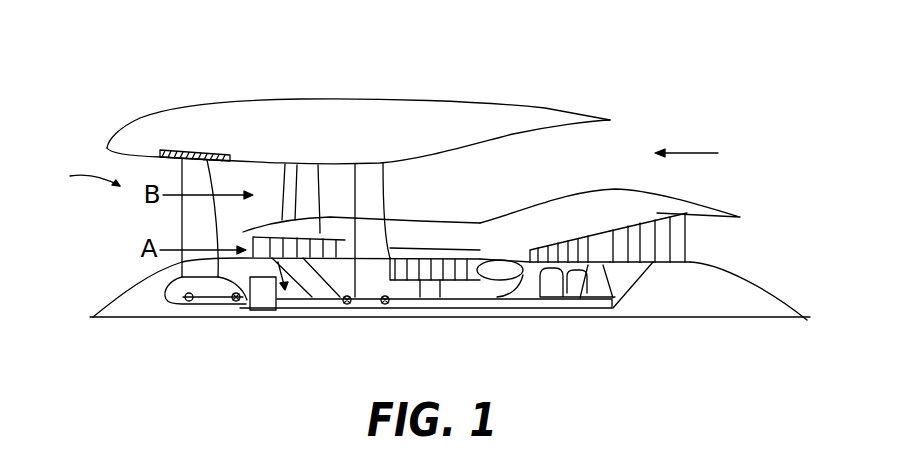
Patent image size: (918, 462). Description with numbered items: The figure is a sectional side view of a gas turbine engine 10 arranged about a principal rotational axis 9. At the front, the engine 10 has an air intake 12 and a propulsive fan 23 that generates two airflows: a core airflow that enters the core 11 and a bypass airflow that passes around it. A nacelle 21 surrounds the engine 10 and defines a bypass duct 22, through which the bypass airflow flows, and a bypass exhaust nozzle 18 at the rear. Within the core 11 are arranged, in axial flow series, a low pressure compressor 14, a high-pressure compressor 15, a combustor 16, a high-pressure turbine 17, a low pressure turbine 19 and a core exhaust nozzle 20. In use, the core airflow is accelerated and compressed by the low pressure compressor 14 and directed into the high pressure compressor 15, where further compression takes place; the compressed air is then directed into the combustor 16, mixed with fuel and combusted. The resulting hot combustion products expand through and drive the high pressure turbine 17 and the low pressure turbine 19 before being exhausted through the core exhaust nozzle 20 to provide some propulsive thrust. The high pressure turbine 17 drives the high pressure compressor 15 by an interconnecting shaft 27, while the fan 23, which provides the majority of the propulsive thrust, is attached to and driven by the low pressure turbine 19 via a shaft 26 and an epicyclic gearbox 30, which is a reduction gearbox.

The principal rotational axis 9 is at (660, 320).
The gas turbine engine 10 is at (160, 112).
The core 11 is at (488, 230).
The air intake 12 is at (82, 174).
The low pressure compressor 14 is at (316, 176).
The high-pressure compressor 15 is at (437, 256).
The combustor 16 is at (503, 278).
The high-pressure turbine 17 is at (551, 256).
The bypass exhaust nozzle 18 is at (701, 154).
The low pressure turbine 19 is at (664, 232).
The core exhaust nozzle 20 is at (720, 248).
The nacelle 21 is at (380, 107).
The bypass duct 22 is at (587, 166).
The propulsive fan 23 is at (185, 223).
The shaft 26 is at (438, 300).
The interconnecting shaft 27 is at (468, 288).
The epicyclic gearbox 30 is at (262, 297).